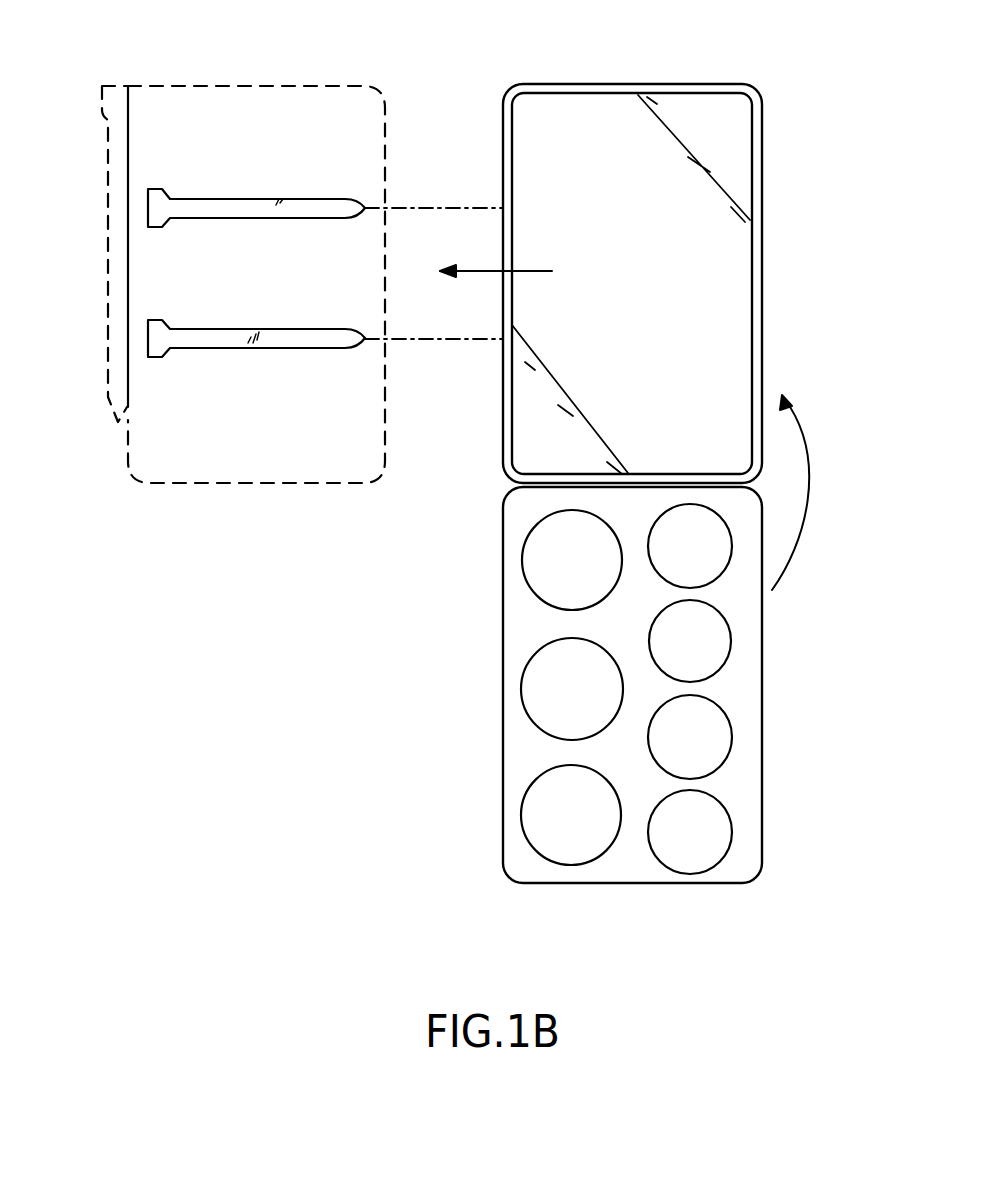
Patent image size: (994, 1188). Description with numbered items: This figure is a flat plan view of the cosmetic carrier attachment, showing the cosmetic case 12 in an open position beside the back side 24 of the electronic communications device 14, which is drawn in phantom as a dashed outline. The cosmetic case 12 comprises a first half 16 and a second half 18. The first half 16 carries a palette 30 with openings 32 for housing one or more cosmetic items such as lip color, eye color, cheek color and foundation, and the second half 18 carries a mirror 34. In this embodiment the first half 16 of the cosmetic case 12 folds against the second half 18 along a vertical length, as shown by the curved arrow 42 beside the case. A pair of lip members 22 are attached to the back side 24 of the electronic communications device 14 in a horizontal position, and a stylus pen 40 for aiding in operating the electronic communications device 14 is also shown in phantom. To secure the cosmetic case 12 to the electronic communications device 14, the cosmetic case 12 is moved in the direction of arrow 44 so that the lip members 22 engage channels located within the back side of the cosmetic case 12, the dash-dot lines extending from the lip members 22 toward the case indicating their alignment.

The cosmetic case 12 is at (704, 483).
The electronic communications device 14 is at (248, 249).
The first half 16 is at (680, 685).
The second half 18 is at (686, 283).
The lip members 22 is at (333, 208).
The back side 24 is at (284, 442).
The palette 30 is at (689, 689).
The openings 32 is at (703, 736).
The mirror 34 is at (658, 278).
The stylus pen 40 is at (120, 242).
The arrow 42 is at (805, 470).
The arrow 44 is at (478, 271).